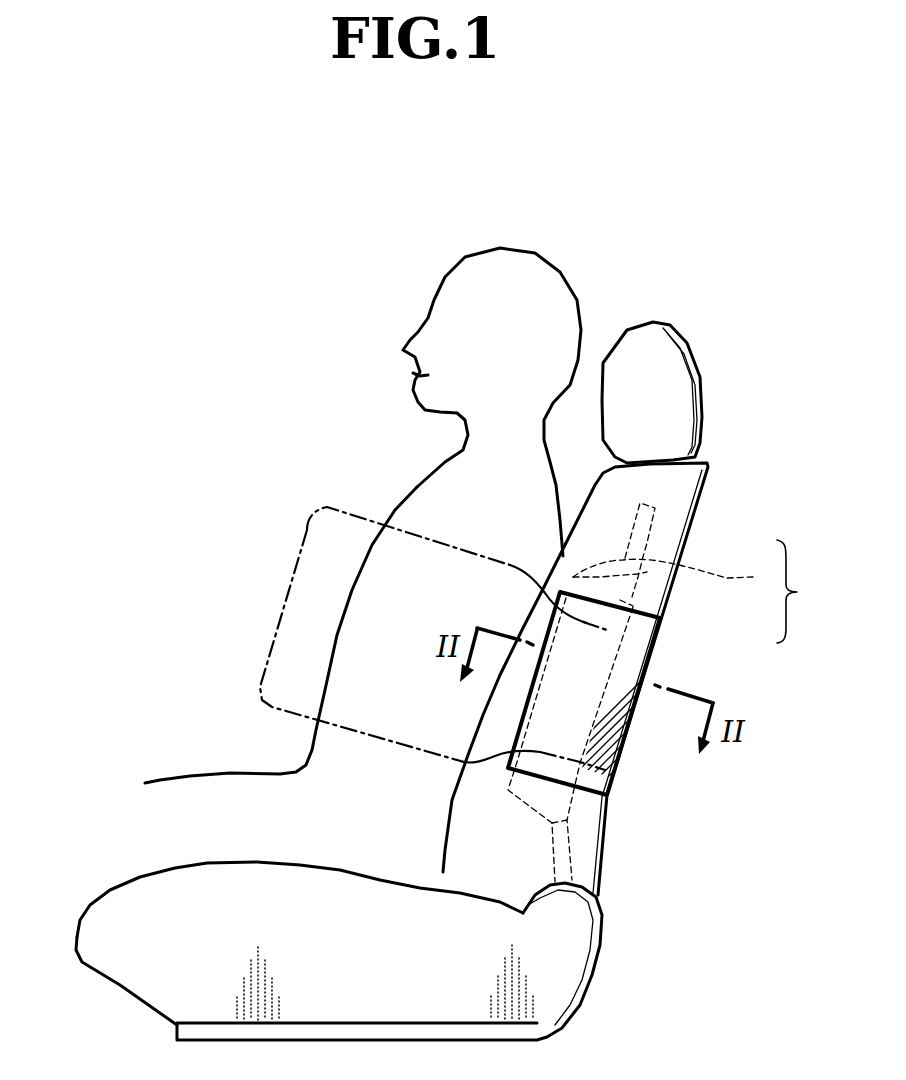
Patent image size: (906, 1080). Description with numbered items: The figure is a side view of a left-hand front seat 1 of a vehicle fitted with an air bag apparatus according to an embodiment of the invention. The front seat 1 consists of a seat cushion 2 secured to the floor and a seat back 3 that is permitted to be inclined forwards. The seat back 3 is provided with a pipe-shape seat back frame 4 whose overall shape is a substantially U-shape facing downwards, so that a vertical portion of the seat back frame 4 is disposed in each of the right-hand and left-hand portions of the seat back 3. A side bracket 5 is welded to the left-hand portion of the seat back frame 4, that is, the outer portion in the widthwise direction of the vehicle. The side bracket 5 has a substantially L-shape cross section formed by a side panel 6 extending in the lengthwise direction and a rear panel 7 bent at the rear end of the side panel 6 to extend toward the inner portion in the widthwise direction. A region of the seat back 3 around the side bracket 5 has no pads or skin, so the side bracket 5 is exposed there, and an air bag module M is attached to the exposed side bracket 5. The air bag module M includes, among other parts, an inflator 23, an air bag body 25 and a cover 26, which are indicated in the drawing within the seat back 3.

The front seat 1 is at (640, 878).
The seat cushion 2 is at (117, 887).
The seat back 3 is at (717, 467).
The seat back frame 4 is at (647, 543).
The side bracket 5 is at (801, 591).
The side panel 6 is at (677, 571).
The rear panel 7 is at (632, 597).
The inflator 23 is at (637, 757).
The air bag body 25 is at (282, 611).
The cover 26 is at (603, 807).
The air bag module M is at (645, 752).